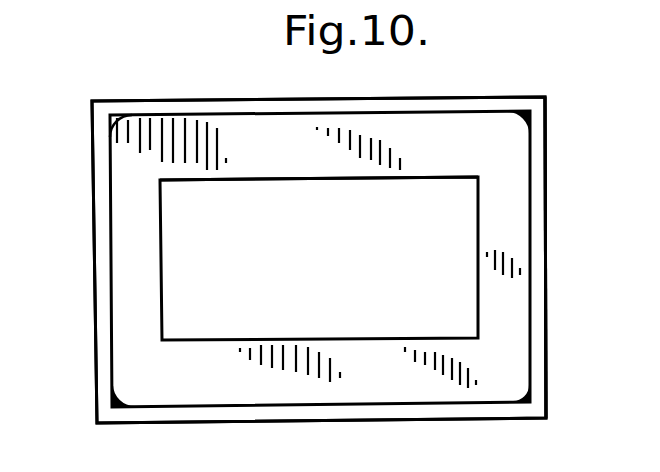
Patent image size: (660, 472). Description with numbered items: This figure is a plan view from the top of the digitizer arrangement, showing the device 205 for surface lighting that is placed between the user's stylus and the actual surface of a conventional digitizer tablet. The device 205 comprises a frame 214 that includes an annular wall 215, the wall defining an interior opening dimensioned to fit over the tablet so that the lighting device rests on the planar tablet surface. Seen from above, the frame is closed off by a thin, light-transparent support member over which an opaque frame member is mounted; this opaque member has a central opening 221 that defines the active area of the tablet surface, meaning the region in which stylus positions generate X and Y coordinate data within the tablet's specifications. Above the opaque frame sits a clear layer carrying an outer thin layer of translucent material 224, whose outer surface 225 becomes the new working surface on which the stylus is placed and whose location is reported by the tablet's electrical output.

The device for surface lighting 205 is at (90, 383).
The frame 214 is at (205, 104).
The annular wall 215 is at (547, 387).
The central opening 221 is at (443, 177).
The translucent material layer 224 is at (511, 310).
The outer surface of translucent layer 225 is at (458, 225).